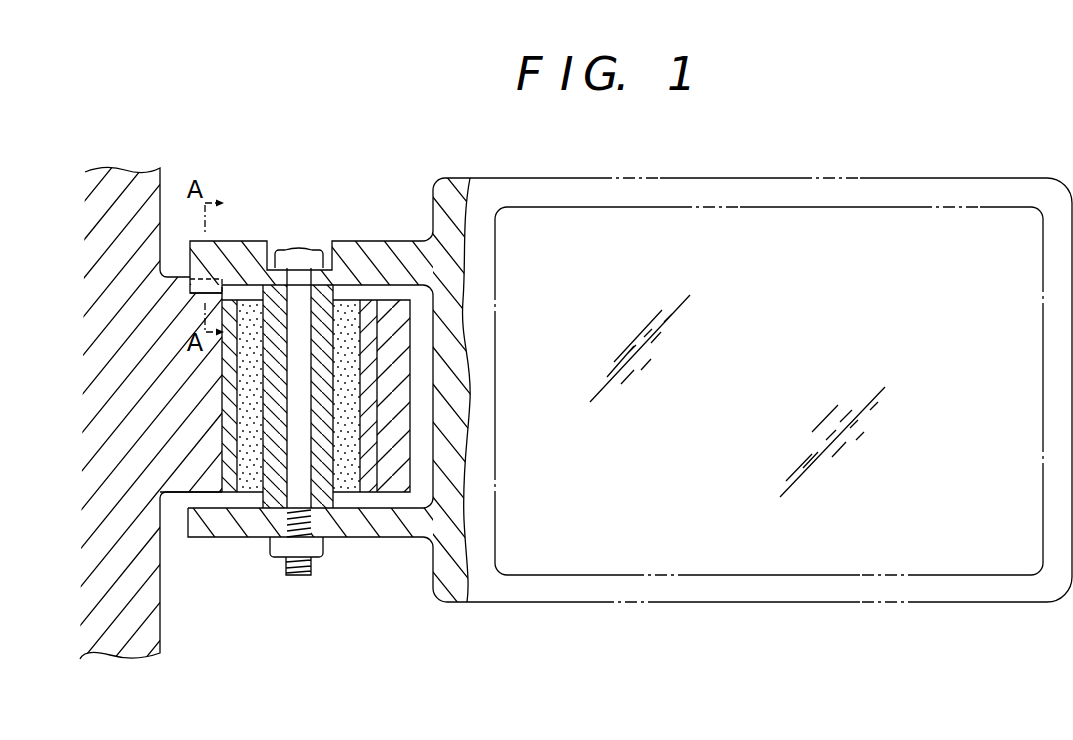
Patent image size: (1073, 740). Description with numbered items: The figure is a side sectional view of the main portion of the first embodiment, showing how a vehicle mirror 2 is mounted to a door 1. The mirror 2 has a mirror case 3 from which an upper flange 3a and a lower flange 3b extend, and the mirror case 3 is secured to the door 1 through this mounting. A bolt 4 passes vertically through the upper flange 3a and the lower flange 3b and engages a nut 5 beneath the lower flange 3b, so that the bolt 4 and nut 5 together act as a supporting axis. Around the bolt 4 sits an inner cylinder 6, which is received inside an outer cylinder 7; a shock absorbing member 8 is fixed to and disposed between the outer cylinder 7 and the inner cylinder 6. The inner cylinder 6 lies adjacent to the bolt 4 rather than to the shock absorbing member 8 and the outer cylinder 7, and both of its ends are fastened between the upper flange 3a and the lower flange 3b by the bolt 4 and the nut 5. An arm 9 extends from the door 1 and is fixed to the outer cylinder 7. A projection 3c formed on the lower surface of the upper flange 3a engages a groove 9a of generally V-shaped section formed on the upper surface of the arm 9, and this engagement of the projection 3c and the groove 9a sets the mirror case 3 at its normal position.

The door 1 is at (153, 624).
The mirror 2 is at (795, 570).
The mirror case 3 is at (604, 592).
The upper flange 3a is at (401, 241).
The lower flange 3b is at (340, 538).
The projection 3c is at (190, 286).
The bolt 4 is at (299, 252).
The nut 5 is at (274, 553).
The inner cylinder 6 is at (262, 285).
The outer cylinder 7 is at (372, 310).
The shock absorbing member 8 is at (346, 313).
The arm 9 is at (390, 487).
The groove 9a is at (192, 303).